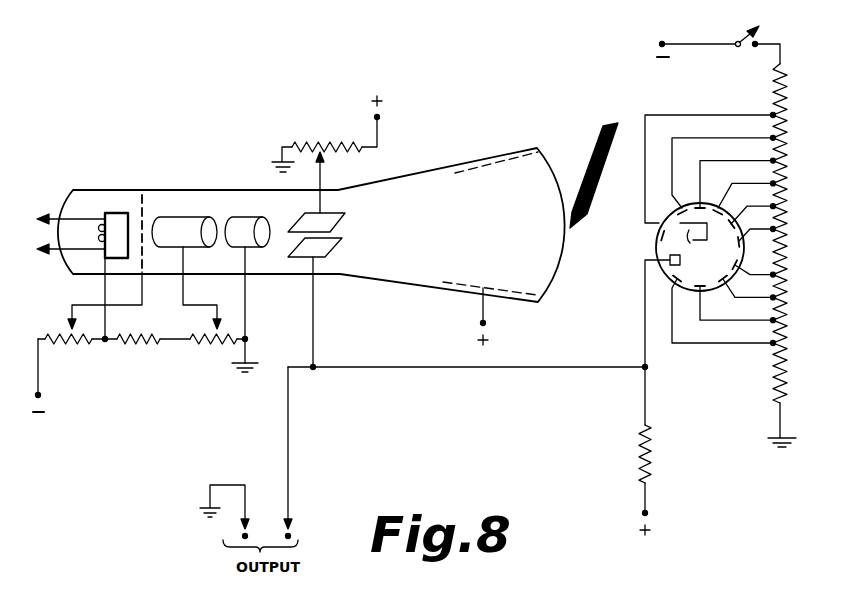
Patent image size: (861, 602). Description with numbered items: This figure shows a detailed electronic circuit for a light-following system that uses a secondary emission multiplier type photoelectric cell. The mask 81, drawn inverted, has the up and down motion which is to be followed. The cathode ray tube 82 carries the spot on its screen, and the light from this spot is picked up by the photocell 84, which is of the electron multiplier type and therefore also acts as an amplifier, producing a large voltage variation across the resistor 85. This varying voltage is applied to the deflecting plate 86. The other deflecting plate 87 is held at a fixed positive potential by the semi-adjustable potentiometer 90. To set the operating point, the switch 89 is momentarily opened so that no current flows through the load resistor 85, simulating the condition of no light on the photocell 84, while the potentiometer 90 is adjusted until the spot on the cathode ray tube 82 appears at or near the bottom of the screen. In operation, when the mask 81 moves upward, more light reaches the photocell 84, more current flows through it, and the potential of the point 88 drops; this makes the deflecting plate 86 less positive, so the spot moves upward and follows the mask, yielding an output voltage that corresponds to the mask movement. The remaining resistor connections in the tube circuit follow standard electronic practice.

The mask 81 is at (599, 146).
The cathode ray tube 82 is at (421, 180).
The photocell 84 is at (655, 240).
The resistor 85 is at (640, 447).
The deflecting plate 86 is at (307, 250).
The deflecting plate 87 is at (326, 206).
The point 88 is at (641, 368).
The switch 89 is at (738, 42).
The semi-adjustable potentiometer 90 is at (319, 142).